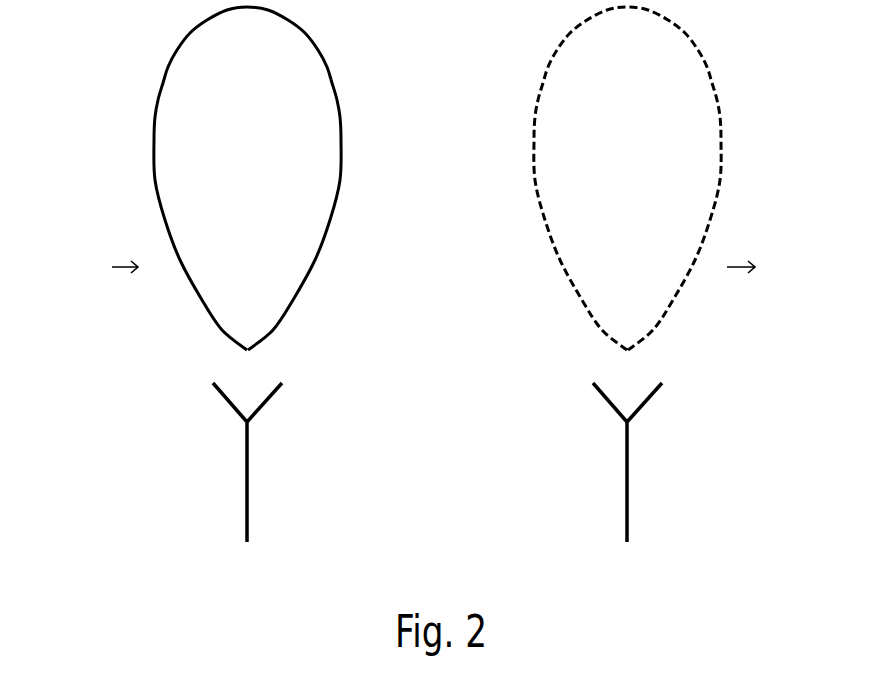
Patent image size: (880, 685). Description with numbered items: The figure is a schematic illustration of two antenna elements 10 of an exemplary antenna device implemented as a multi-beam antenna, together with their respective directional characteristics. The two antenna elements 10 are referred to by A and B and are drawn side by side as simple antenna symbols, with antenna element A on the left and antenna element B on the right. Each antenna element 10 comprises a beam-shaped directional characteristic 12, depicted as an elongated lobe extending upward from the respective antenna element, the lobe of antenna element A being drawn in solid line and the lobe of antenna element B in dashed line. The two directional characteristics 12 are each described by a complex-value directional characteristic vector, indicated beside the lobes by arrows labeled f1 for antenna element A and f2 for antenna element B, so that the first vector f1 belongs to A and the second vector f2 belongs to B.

The antenna element 10 is at (468, 485).
The directional characteristic 12 is at (153, 162).
The first antenna element designation A is at (247, 485).
The second antenna element designation B is at (627, 485).
The complex-value directional characteristic vector of the first antenna element f1 is at (125, 285).
The complex-value directional characteristic vector of the second antenna element f2 is at (741, 285).